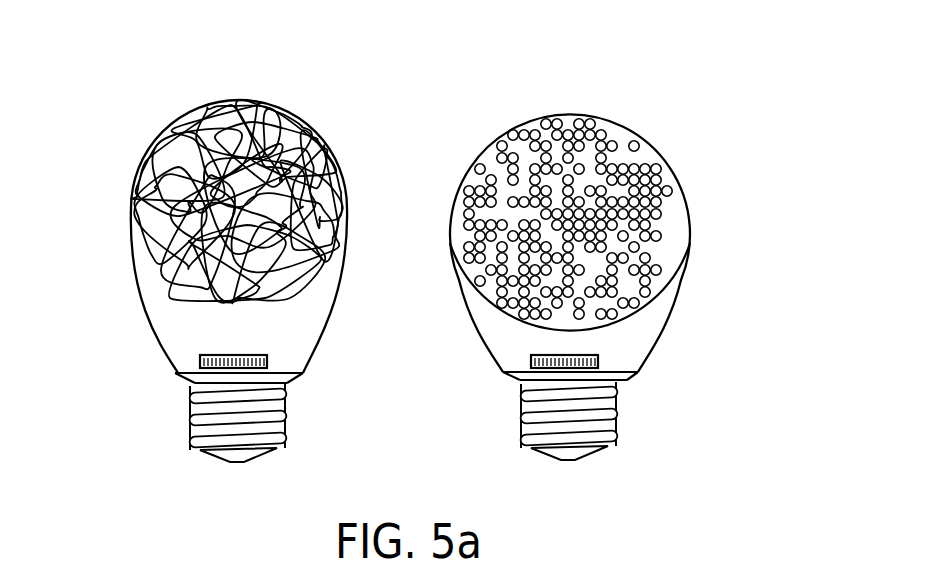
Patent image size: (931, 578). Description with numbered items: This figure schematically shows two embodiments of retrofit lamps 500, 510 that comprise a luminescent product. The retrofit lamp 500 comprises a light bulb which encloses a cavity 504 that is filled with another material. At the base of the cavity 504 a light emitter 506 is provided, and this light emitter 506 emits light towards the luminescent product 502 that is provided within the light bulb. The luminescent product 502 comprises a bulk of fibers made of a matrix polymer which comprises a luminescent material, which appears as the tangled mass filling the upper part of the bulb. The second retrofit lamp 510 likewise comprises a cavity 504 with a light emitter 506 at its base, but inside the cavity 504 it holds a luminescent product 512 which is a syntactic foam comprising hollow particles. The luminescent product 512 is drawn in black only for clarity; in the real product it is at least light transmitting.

The retrofit lamp 500 is at (118, 112).
The luminescent product 502 is at (152, 222).
The cavity 504 is at (160, 310).
The light emitter 506 is at (200, 358).
The retrofit lamp 510 is at (694, 102).
The luminescent product 512 is at (673, 272).